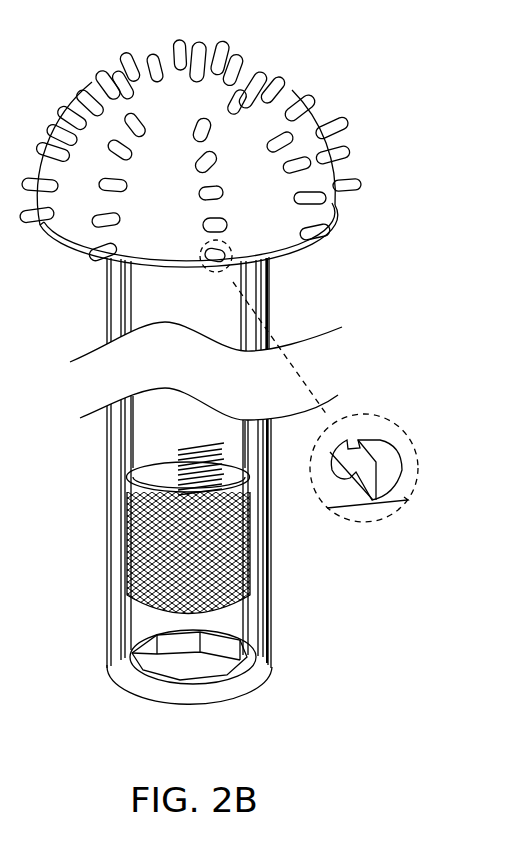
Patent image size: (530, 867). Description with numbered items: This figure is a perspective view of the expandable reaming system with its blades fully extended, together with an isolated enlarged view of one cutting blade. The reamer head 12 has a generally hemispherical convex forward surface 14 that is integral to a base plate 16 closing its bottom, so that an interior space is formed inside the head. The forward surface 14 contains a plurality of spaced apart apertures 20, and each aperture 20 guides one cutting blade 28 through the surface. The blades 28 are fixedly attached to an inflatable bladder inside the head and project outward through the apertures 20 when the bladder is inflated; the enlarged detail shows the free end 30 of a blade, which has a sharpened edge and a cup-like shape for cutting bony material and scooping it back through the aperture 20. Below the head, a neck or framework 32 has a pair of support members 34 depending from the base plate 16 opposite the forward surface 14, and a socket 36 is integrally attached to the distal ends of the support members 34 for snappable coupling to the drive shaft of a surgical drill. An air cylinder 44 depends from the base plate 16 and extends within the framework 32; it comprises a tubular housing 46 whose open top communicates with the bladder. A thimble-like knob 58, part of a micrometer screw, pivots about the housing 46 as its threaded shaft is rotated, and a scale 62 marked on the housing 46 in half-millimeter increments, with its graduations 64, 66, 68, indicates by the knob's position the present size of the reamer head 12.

The reamer head 12 is at (314, 63).
The forward surface 14 is at (280, 230).
The base plate 16 is at (68, 259).
The aperture 20 is at (332, 464).
The cutting blade 28 is at (341, 192).
The free end 30 is at (385, 467).
The framework 32 is at (285, 594).
The support member 34 is at (272, 570).
The socket 36 is at (150, 687).
The air cylinder 44 is at (128, 429).
The tubular housing 46 is at (184, 431).
The knob 58 is at (137, 556).
The scale 62 is at (127, 463).
The graduation mark 64 is at (209, 482).
The graduation mark 66 is at (209, 465).
The graduation mark 68 is at (209, 450).